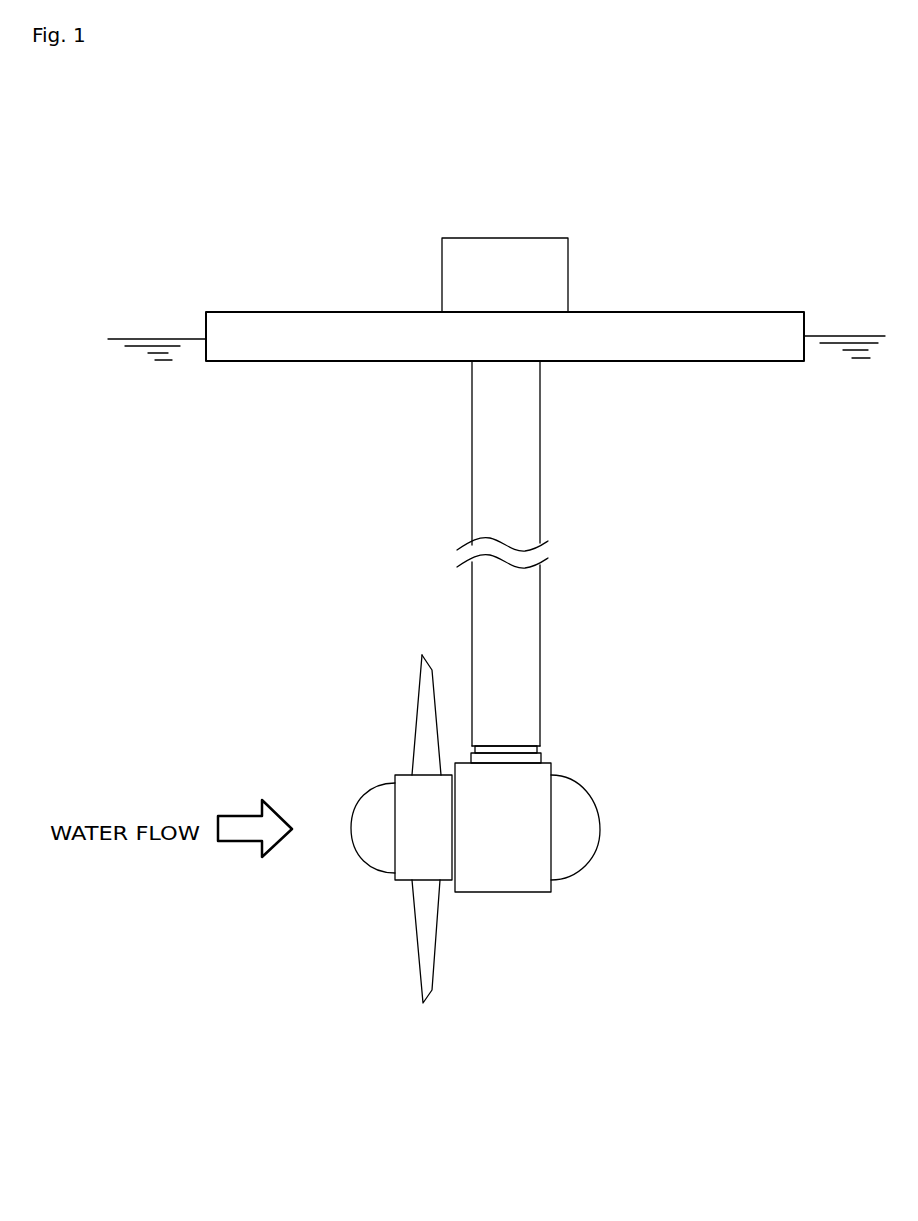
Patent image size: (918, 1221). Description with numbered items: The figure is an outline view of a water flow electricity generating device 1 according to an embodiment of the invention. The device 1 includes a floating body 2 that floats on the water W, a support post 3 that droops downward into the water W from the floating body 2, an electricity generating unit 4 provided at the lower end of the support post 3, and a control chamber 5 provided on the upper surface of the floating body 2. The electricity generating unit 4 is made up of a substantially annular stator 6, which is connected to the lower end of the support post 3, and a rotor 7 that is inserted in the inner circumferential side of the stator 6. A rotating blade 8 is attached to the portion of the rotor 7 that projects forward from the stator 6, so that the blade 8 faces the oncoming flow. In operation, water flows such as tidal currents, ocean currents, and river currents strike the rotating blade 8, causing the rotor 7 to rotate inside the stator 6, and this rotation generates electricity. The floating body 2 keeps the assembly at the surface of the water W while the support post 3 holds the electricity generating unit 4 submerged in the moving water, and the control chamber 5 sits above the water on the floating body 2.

The water flow electricity generating device 1 is at (328, 573).
The floating body 2 is at (762, 312).
The support post 3 is at (540, 623).
The electricity generating unit 4 is at (491, 829).
The control chamber 5 is at (528, 238).
The stator 6 is at (537, 781).
The rotor 7 is at (400, 882).
The rotating blade 8 is at (418, 702).
The water W is at (150, 380).